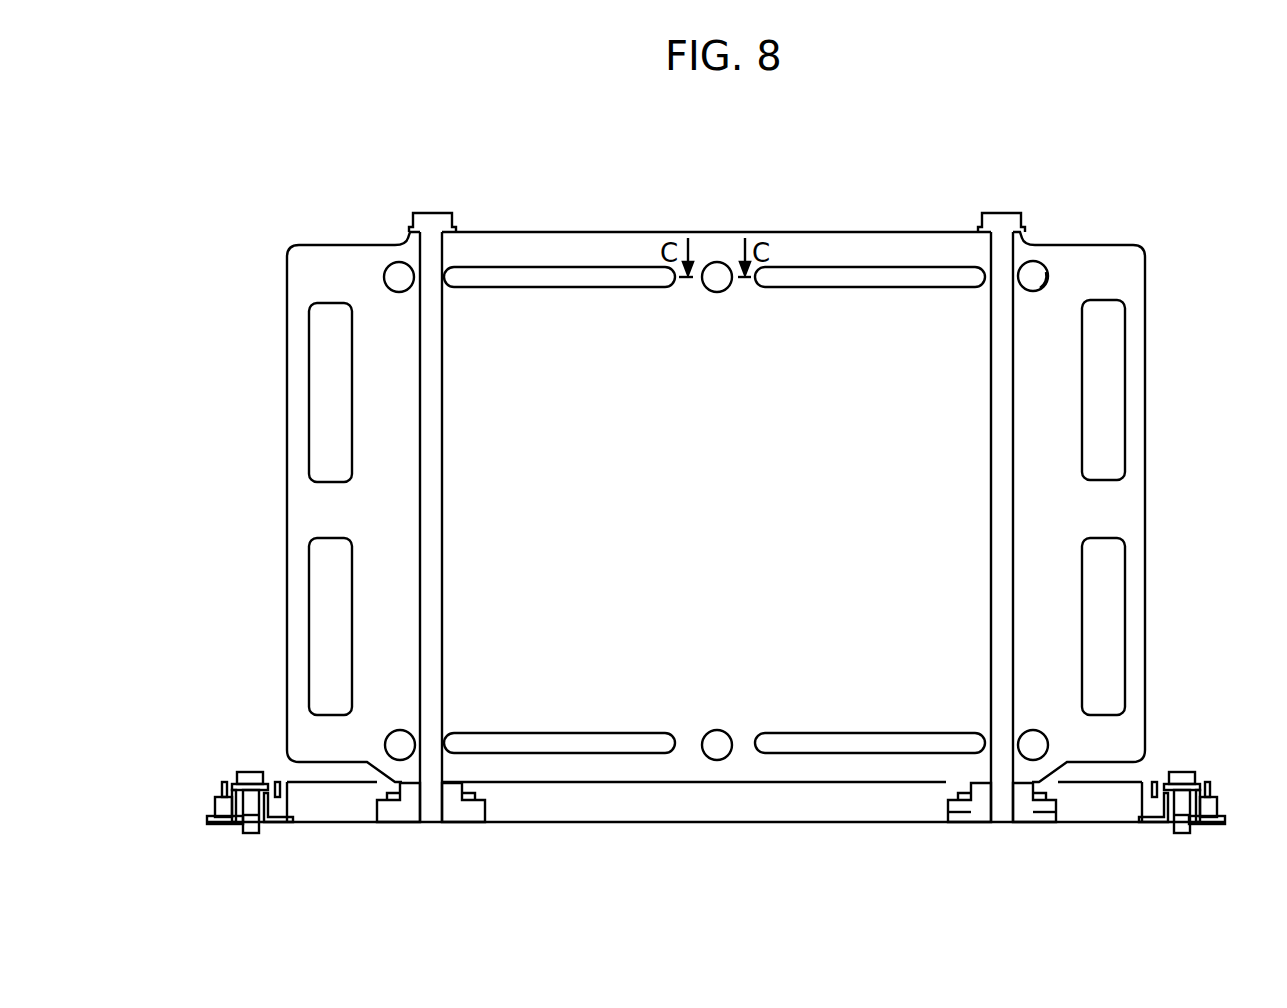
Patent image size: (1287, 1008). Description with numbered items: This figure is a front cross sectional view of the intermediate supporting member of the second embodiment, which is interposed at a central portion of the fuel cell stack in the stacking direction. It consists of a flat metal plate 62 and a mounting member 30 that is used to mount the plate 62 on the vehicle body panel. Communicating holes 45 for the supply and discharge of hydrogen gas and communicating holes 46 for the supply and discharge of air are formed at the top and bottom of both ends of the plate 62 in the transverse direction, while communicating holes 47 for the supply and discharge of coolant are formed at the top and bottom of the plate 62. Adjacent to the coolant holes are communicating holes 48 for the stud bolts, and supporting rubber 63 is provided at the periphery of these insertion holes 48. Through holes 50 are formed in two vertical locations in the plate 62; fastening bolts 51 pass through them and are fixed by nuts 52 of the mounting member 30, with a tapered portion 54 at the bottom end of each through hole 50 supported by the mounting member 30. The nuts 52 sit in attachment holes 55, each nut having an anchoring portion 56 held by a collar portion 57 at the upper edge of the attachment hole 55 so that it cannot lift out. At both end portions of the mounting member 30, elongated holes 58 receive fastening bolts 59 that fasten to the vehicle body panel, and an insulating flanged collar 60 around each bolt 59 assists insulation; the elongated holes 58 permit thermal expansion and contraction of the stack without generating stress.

The mounting member 30 is at (1146, 778).
The communicating holes 45 is at (325, 416).
The communicating holes 46 is at (325, 622).
The communicating holes 47 is at (580, 267).
The communicating holes 48 is at (717, 272).
The through holes 50 is at (421, 402).
The fastening bolts 51 is at (430, 212).
The nuts 52 is at (985, 815).
The tapered portion 54 is at (955, 808).
The attachment holes 55 is at (1040, 815).
The anchoring portion 56 is at (955, 815).
The collar portion 57 is at (1042, 802).
The elongated holes 58 is at (1192, 822).
The fastening bolts 59 is at (1185, 772).
The collar 60 is at (1218, 796).
The plate 62 is at (1160, 360).
The supporting rubber 63 is at (1044, 284).